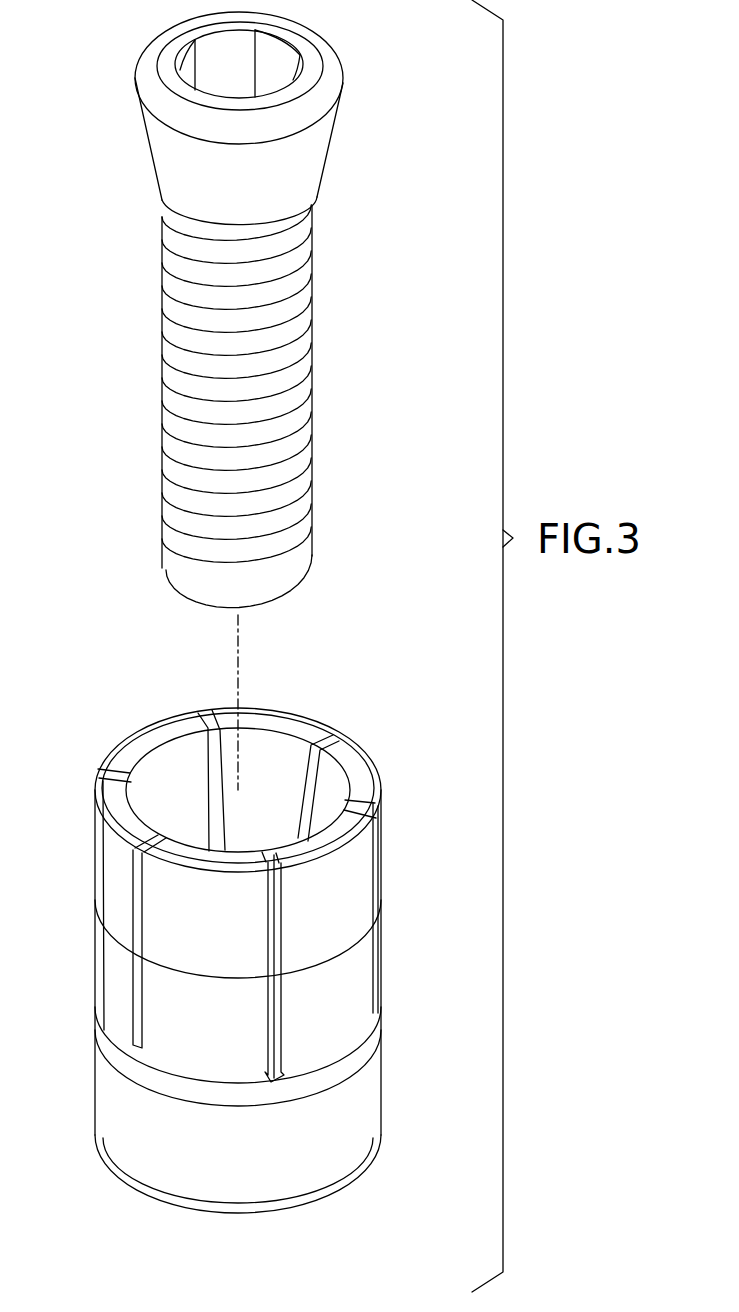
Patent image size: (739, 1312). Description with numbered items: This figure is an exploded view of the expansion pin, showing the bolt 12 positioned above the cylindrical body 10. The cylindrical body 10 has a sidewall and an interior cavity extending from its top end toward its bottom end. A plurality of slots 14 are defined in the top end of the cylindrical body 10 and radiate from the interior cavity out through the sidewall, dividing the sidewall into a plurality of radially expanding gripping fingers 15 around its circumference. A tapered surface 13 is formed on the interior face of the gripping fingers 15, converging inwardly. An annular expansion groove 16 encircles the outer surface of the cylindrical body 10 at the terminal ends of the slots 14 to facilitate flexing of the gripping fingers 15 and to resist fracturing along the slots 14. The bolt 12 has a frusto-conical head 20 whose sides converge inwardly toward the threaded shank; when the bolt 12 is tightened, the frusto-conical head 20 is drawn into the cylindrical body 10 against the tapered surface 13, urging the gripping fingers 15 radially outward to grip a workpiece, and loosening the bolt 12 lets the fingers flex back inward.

The cylindrical body 10 is at (375, 1083).
The bolt 12 is at (312, 313).
The tapered surface 13 is at (198, 807).
The slots 14 is at (210, 707).
The gripping fingers 15 is at (142, 740).
The annular expansion groove 16 is at (267, 1090).
The frusto-conical head 20 is at (323, 148).